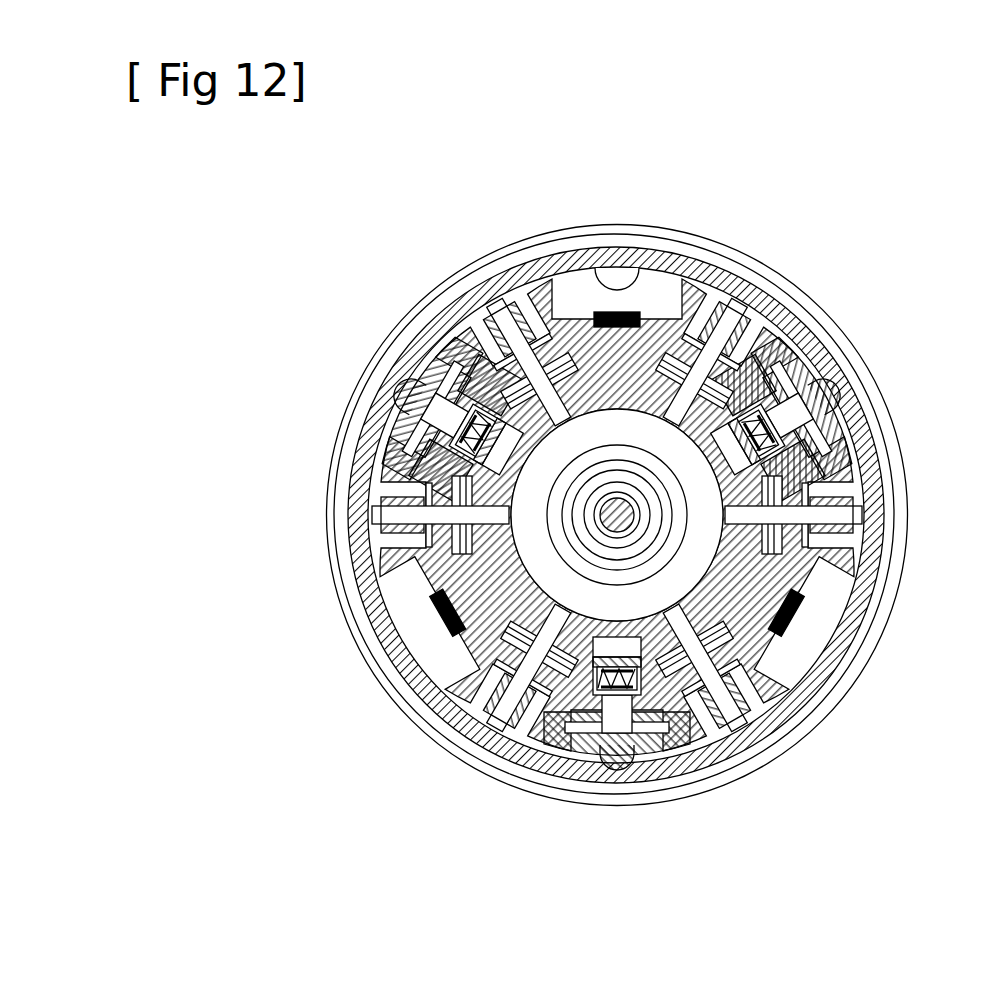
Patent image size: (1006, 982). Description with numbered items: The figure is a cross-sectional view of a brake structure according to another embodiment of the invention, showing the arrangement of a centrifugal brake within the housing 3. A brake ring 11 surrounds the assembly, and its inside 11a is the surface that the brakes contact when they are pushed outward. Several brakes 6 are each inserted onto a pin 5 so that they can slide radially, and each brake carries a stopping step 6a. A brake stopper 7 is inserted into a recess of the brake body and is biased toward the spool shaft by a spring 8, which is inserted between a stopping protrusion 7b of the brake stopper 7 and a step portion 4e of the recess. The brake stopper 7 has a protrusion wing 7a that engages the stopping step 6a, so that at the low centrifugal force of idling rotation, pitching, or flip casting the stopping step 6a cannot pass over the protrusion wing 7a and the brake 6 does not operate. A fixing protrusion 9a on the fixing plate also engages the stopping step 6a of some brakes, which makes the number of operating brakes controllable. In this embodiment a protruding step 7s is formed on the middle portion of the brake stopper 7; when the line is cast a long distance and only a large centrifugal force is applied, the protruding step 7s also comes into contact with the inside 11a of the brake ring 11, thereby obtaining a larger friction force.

The housing 3 is at (617, 463).
The step portion 4e is at (512, 549).
The pin 5 is at (617, 483).
The brake 6 is at (599, 577).
The stopping step 6a is at (619, 477).
The brake stopper 7 is at (525, 526).
The protrusion wing 7a is at (596, 570).
The stopping protrusion 7b is at (561, 416).
The protruding step 7s is at (679, 626).
The spring 8 is at (533, 563).
The fixing protrusion 9a is at (526, 606).
The brake ring 11 is at (616, 465).
The inside 11a is at (579, 208).